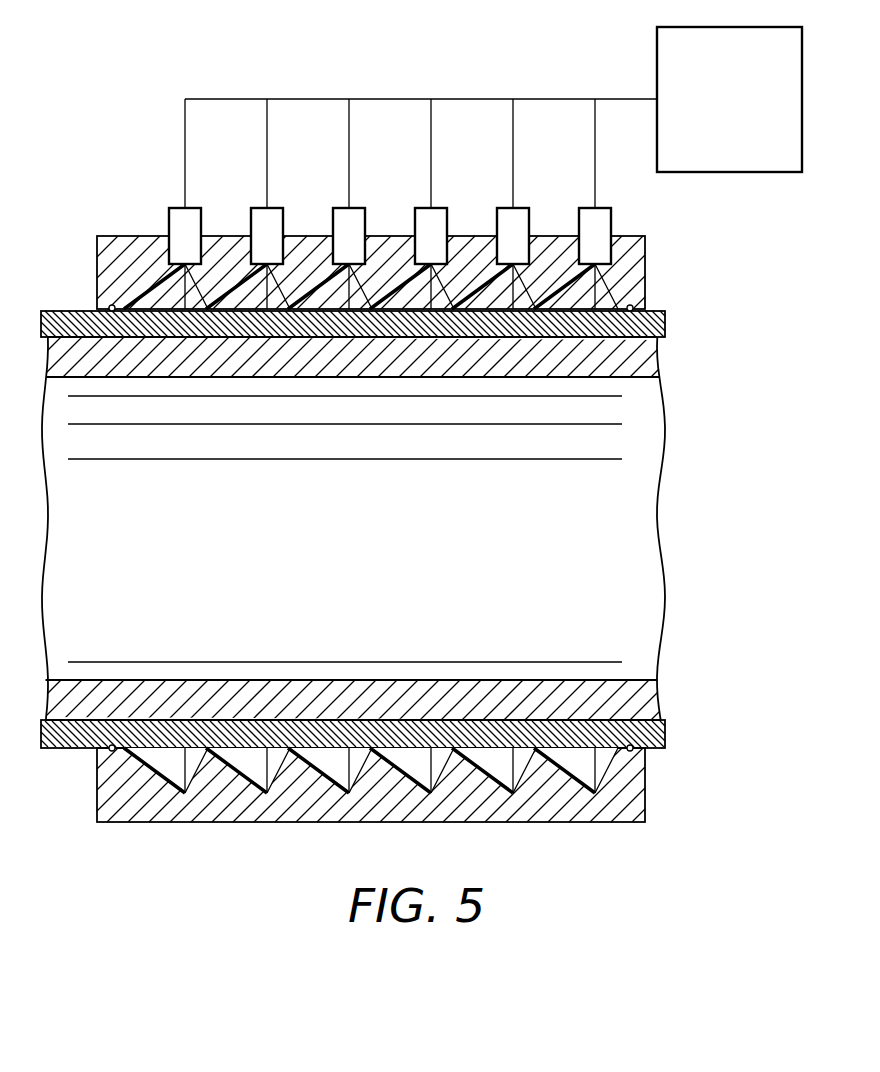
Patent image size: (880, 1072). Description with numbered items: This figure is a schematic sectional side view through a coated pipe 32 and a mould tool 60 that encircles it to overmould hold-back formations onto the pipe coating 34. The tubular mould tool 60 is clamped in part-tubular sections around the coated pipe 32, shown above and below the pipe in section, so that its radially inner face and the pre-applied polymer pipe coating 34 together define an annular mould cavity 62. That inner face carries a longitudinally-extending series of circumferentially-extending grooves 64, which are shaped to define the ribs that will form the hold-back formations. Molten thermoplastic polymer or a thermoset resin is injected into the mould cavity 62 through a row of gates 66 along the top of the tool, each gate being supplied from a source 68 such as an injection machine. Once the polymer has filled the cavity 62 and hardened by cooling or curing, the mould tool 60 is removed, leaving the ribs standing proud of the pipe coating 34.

The coated pipe 32 is at (64, 290).
The pipe coating 34 is at (662, 322).
The mould tool 60 is at (639, 262).
The mould cavity 62 is at (163, 291).
The grooves 64 is at (167, 789).
The gates 66 is at (188, 208).
The source 68 is at (657, 46).